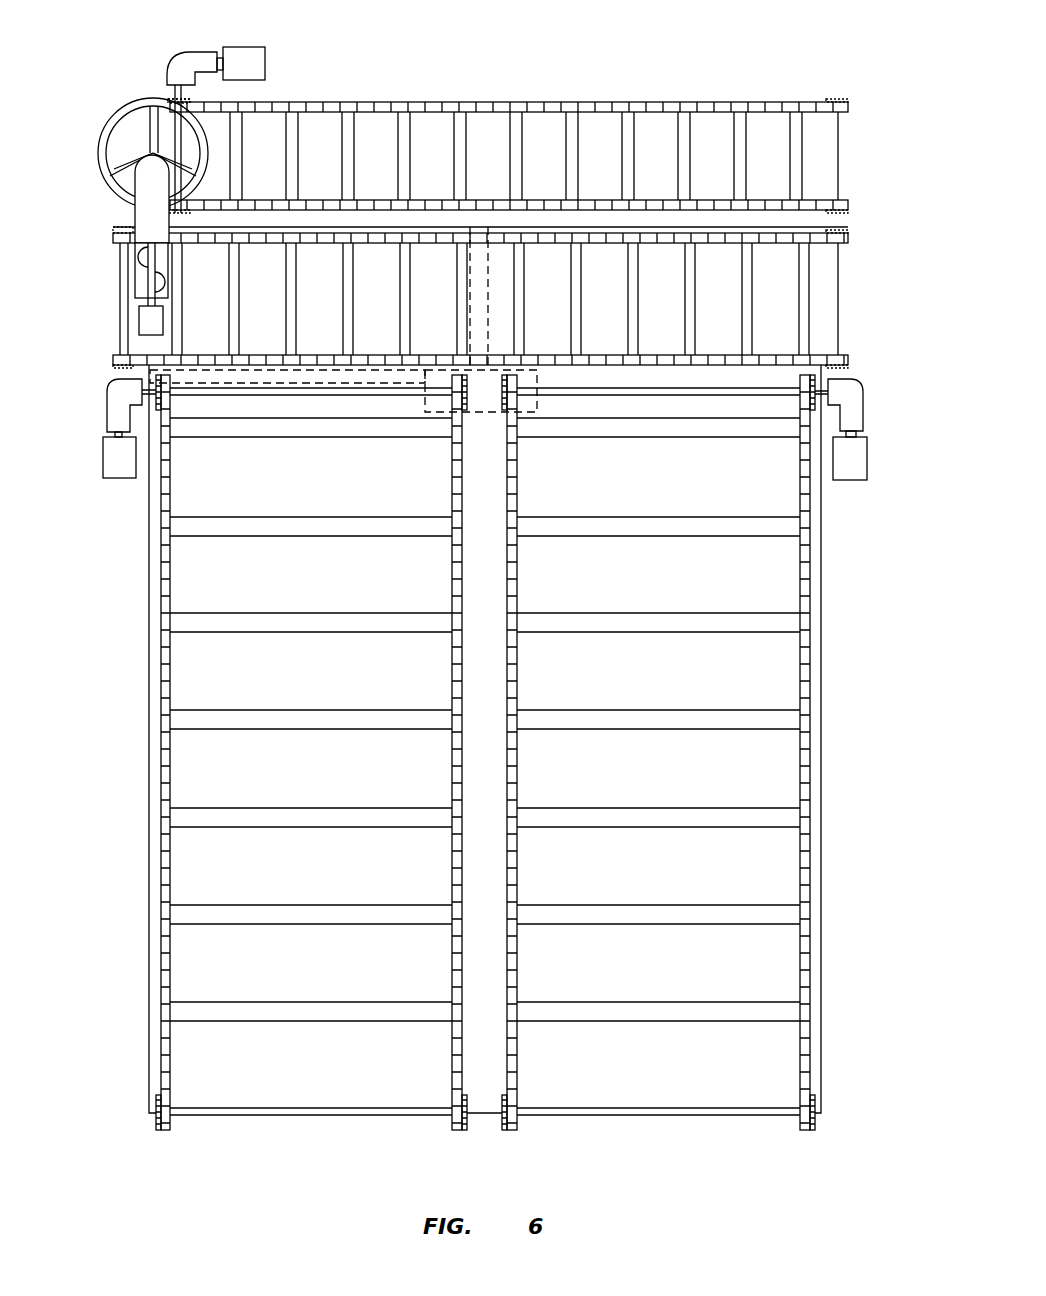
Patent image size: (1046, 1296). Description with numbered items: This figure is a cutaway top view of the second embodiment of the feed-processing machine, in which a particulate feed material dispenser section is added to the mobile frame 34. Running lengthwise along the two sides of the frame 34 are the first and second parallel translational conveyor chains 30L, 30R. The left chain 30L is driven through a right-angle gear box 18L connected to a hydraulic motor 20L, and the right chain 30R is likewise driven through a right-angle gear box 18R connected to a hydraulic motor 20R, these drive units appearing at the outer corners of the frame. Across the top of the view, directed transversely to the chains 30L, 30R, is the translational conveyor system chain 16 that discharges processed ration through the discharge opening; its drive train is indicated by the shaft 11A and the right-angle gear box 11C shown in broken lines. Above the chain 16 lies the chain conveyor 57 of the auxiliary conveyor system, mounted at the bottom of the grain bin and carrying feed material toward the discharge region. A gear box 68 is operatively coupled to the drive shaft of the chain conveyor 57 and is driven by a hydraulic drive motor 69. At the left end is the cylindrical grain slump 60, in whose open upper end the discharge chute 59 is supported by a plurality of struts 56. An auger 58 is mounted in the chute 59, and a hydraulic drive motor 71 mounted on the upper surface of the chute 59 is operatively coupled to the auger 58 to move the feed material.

The chain conveyor 57 is at (758, 102).
The translational conveyor system chain 16 is at (636, 290).
The shaft 11A is at (488, 300).
The right-angle gear box 11C is at (537, 405).
The mobile frame 34 is at (825, 909).
The first translational conveyor chain 30L is at (156, 686).
The second translational conveyor chain 30R is at (815, 686).
The right-angle gear box 18L is at (107, 418).
The hydraulic motor 20L is at (103, 460).
The right-angle gear box 18R is at (863, 412).
The hydraulic motor 20R is at (867, 465).
The struts 56 is at (140, 133).
The cylindrical grain slump 60 is at (148, 100).
The discharge chute 59 is at (130, 218).
The auger 58 is at (143, 257).
The hydraulic drive motor 71 is at (139, 318).
The gear box 68 is at (198, 52).
The hydraulic drive motor 69 is at (250, 47).